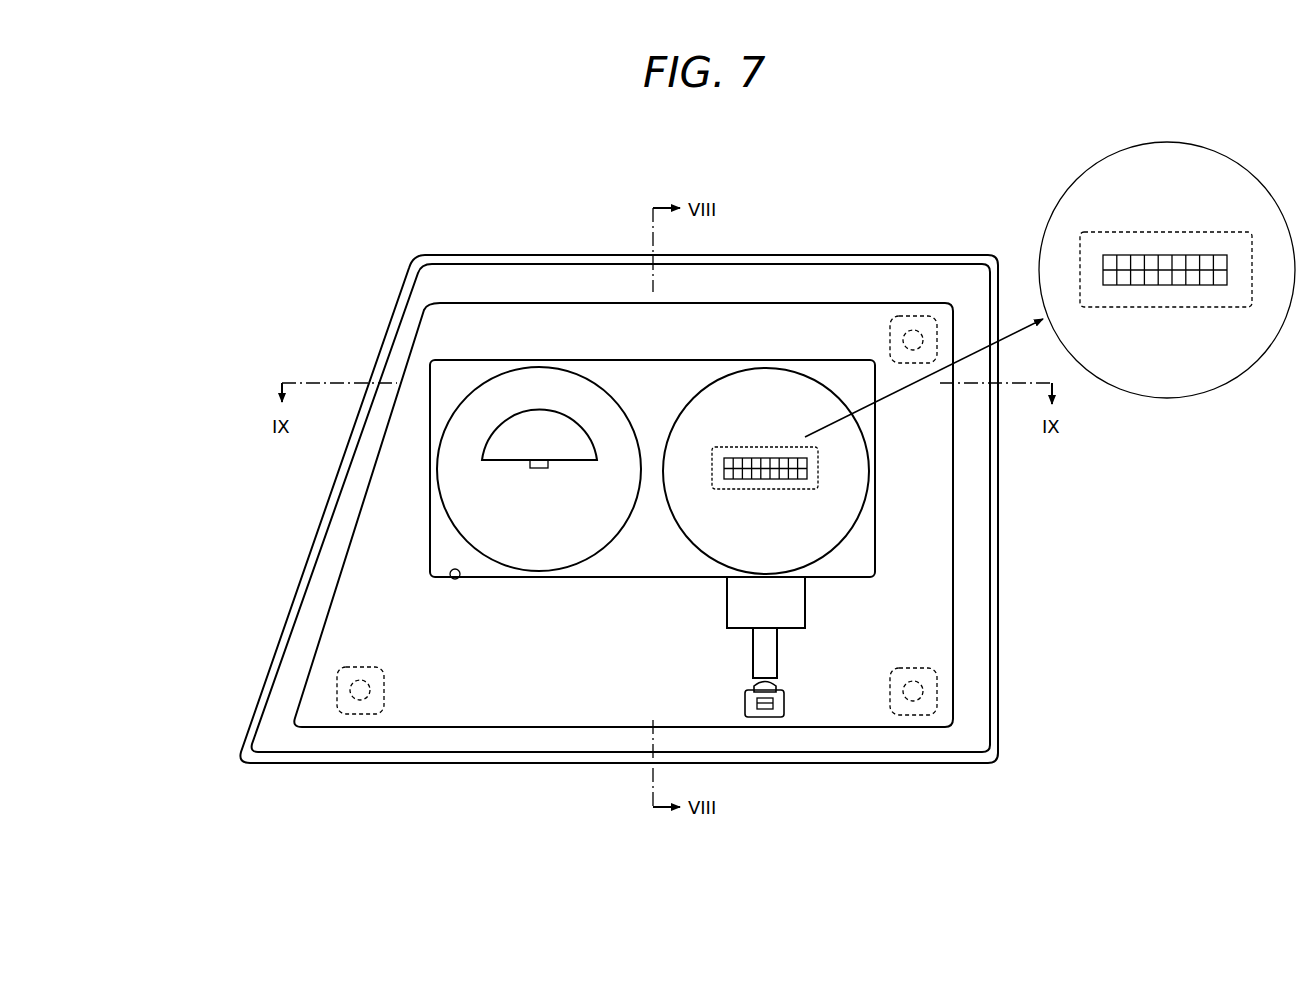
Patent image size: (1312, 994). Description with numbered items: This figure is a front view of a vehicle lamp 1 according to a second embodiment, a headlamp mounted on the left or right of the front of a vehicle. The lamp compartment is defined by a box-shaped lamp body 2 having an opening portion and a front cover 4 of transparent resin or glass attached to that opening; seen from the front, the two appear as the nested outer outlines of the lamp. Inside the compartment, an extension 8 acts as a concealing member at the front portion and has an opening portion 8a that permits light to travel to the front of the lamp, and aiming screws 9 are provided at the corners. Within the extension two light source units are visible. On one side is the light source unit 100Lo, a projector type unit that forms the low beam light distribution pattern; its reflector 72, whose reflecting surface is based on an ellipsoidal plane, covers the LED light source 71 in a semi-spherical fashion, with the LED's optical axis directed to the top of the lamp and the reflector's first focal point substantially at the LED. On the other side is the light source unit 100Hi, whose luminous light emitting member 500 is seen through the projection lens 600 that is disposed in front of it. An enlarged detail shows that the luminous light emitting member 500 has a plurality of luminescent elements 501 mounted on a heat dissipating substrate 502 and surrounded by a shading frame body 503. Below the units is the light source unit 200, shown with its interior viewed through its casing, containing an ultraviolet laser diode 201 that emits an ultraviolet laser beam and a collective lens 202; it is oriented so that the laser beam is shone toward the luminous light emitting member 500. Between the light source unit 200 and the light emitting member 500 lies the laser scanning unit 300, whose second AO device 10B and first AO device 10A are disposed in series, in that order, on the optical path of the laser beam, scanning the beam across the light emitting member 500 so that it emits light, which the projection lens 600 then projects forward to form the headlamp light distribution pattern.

The vehicle lamp 1 is at (286, 225).
The lamp body 2 is at (447, 256).
The front cover 4 is at (488, 264).
The extension 8 is at (367, 562).
The opening portion 8a is at (456, 580).
The aiming screws 9 is at (913, 316).
The light source unit 100Lo is at (574, 365).
The light source unit 100Hi is at (800, 365).
The LED light source 71 is at (539, 470).
The reflector 72 is at (536, 410).
The luminous light emitting member 500 is at (822, 467).
The luminescent elements 501 is at (1108, 260).
The heat dissipating substrate 502 is at (1232, 296).
The shading frame body 503 is at (1135, 274).
The projection lens 600 is at (858, 522).
The laser scanning unit 300 is at (724, 620).
The first AO device 10A is at (797, 600).
The second AO device 10B is at (769, 649).
The light source unit 200 is at (730, 690).
The ultraviolet laser diode 201 is at (782, 705).
The collective lens 202 is at (775, 687).